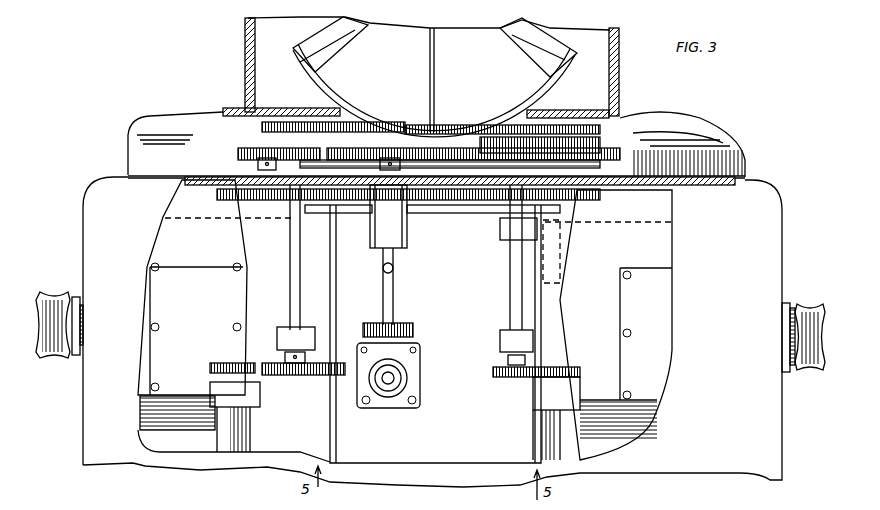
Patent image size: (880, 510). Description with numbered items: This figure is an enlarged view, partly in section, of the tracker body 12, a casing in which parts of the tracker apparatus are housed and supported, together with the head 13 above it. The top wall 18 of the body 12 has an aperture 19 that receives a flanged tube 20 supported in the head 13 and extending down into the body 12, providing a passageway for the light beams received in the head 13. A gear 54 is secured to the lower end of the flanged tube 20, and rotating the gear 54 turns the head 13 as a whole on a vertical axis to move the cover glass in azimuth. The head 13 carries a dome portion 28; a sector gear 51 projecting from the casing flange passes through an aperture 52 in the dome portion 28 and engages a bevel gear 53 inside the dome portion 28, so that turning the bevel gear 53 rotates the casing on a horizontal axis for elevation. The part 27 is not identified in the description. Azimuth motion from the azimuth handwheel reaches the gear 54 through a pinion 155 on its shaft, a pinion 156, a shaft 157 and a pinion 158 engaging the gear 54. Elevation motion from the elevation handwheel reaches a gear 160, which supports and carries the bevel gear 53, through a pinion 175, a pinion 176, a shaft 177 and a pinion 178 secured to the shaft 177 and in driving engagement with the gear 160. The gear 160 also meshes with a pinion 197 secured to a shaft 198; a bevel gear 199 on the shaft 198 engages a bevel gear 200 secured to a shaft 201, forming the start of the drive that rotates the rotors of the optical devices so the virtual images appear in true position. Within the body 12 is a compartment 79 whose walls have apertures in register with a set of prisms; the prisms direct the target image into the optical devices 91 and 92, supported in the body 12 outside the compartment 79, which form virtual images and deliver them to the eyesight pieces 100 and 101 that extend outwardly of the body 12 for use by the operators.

The body 12 is at (783, 252).
The top wall 18 is at (742, 183).
The dome portion 28 is at (665, 122).
The hopper left wall 27 is at (245, 40).
The head member 13 is at (618, 46).
The sector gear 51 is at (325, 70).
The aperture 52 is at (530, 108).
The bevel gear 53 is at (262, 126).
The gear 160 is at (238, 154).
The pinion 178 is at (258, 163).
The pinion 197 is at (386, 158).
The aperture 19 is at (338, 196).
The flanged tube 20 is at (358, 214).
The optical device 92 is at (175, 233).
The optical device 91 is at (660, 246).
The shaft 177 is at (290, 228).
The gear 54 is at (437, 205).
The shaft 198 is at (397, 298).
The bevel gear 199 is at (418, 353).
The bevel gear 200 is at (415, 380).
The shaft 201 is at (390, 400).
The pinion 175 is at (222, 362).
The pinion 176 is at (338, 363).
The pinion 158 is at (482, 212).
The shaft 157 is at (510, 262).
The pinion 155 is at (567, 367).
The pinion 156 is at (512, 378).
The compartment 79 is at (365, 435).
The eyesight piece 101 is at (50, 292).
The eyesight piece 100 is at (812, 306).